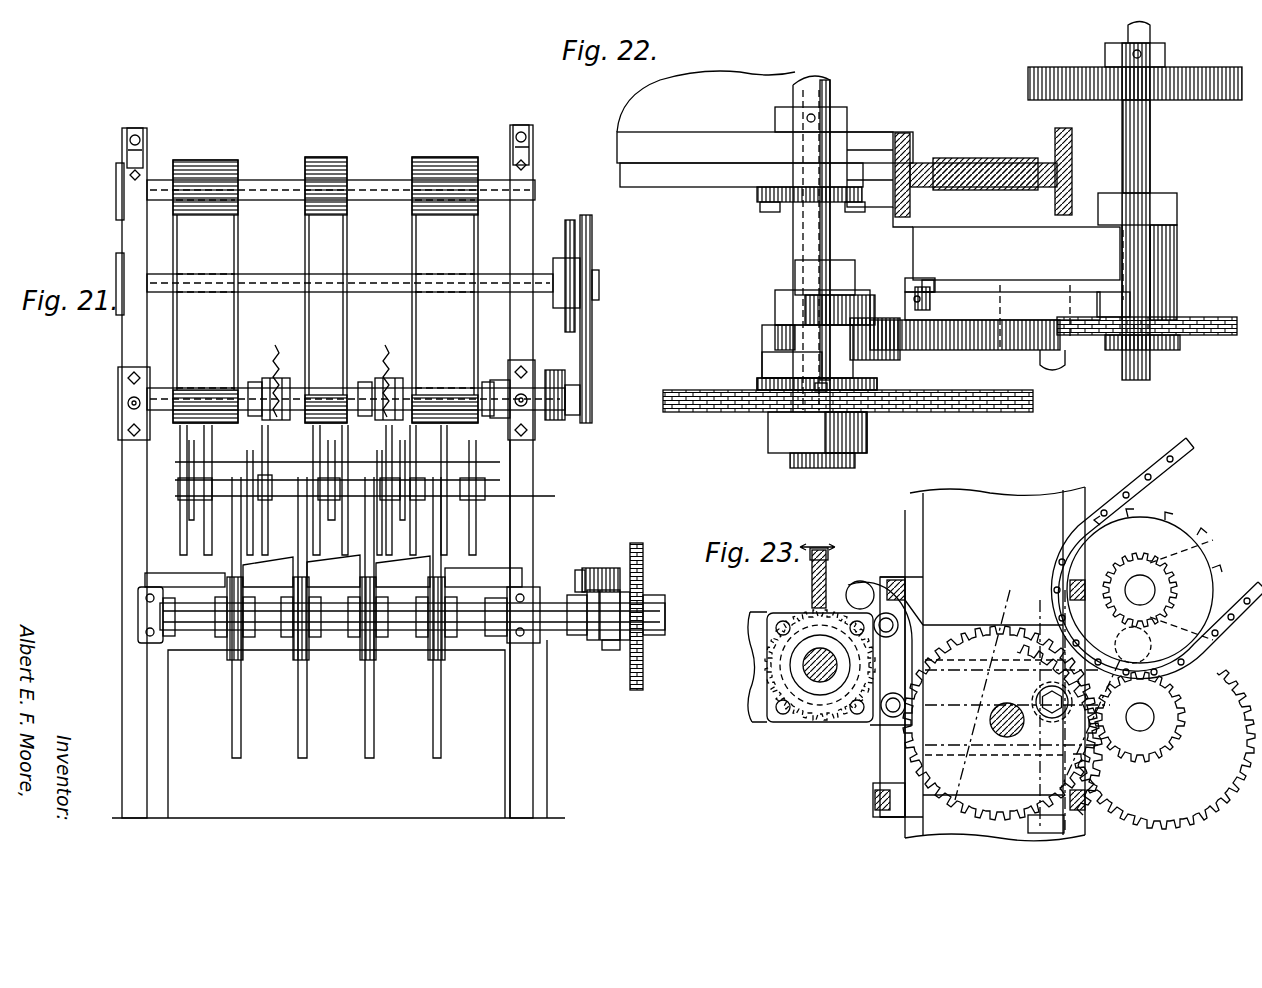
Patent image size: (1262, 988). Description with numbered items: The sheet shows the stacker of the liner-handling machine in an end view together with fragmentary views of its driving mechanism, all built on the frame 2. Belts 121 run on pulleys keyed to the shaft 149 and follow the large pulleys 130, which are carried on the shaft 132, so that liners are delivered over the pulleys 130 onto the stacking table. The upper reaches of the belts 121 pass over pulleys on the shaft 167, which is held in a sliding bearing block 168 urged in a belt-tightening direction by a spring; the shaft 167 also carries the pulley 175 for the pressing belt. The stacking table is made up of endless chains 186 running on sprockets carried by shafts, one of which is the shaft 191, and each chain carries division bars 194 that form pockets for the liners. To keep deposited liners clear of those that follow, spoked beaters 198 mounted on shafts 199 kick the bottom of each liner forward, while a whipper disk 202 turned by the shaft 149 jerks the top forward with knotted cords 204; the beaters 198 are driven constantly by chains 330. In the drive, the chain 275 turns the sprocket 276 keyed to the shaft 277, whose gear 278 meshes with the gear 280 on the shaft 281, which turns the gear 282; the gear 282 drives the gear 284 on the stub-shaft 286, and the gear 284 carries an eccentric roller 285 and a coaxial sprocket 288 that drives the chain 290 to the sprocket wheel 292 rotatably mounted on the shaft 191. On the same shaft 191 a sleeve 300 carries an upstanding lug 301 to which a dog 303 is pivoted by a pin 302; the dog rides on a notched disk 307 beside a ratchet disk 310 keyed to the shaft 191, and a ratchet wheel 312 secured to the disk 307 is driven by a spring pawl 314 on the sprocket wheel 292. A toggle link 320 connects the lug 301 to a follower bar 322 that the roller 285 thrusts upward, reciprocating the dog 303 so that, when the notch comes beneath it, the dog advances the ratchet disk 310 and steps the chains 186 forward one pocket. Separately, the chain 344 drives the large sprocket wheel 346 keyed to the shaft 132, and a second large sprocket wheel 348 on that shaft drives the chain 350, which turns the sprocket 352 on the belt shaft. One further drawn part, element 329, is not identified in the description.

In FIG. 21, the frame 2 is at (520, 456).
In FIG. 22, the frame 2 is at (977, 165).
In FIG. 23, the frame 2 is at (987, 520).
In FIG. 21, the belts 121 is at (220, 251).
In FIG. 21, the large pulleys 130 is at (306, 310).
In FIG. 21, the shaft 132 is at (375, 283).
In FIG. 21, the shaft 149 is at (500, 418).
In FIG. 21, the shaft 167 is at (380, 191).
In FIG. 21, the sliding bearing block 168 is at (147, 146).
In FIG. 21, the pulley 175 is at (305, 172).
In FIG. 21, the endless chains 186 is at (245, 658).
In FIG. 21, the shaft 191 is at (332, 632).
In FIG. 22, the shaft 191 is at (805, 77).
In FIG. 23, the shaft 191 is at (820, 682).
In FIG. 21, the division bars 194 is at (365, 718).
In FIG. 21, the spoked beaters 198 is at (255, 386).
In FIG. 21, the shafts 199 is at (180, 488).
In FIG. 21, the whipper disk 202 is at (283, 388).
In FIG. 21, the cords 204 is at (275, 350).
In FIG. 23, the chain 275 is at (1160, 468).
In FIG. 23, the sprocket 276 is at (1195, 531).
In FIG. 22, the shaft 277 is at (1150, 160).
In FIG. 23, the shaft 277 is at (1140, 575).
In FIG. 22, the gear 278 is at (1168, 101).
In FIG. 23, the gear 278 is at (1213, 560).
In FIG. 22, the gear 280 is at (1210, 68).
In FIG. 23, the gear 280 is at (1175, 820).
In FIG. 23, the shaft 281 is at (1145, 718).
In FIG. 22, the gear 282 is at (1125, 352).
In FIG. 23, the gear 282 is at (1165, 760).
In FIG. 22, the gear 284 is at (1060, 370).
In FIG. 23, the gear 284 is at (1042, 833).
In FIG. 22, the eccentric roller 285 is at (1070, 290).
In FIG. 23, the eccentric roller 285 is at (1015, 770).
In FIG. 23, the stub-shaft 286 is at (1000, 722).
In FIG. 22, the sprocket 288 is at (1035, 411).
In FIG. 21, the chain 290 is at (643, 660).
In FIG. 22, the chain 290 is at (955, 413).
In FIG. 22, the sprocket wheel 292 is at (770, 430).
In FIG. 21, the sleeve 300 is at (577, 635).
In FIG. 22, the sleeve 300 is at (800, 300).
In FIG. 21, the upstanding lug 301 is at (580, 572).
In FIG. 22, the upstanding lug 301 is at (935, 280).
In FIG. 22, the pin 302 is at (870, 362).
In FIG. 21, the dog 303 is at (612, 568).
In FIG. 22, the dog 303 is at (825, 340).
In FIG. 23, the dog 303 is at (860, 583).
In FIG. 21, the notched disk 307 is at (612, 640).
In FIG. 22, the notched disk 307 is at (776, 370).
In FIG. 22, the ratchet disk 310 is at (766, 341).
In FIG. 21, the ratchet wheel 312 is at (628, 690).
In FIG. 22, the ratchet wheel 312 is at (760, 383).
In FIG. 23, the ratchet wheel 312 is at (785, 700).
In FIG. 22, the spring pawl 314 is at (821, 392).
In FIG. 23, the spring pawl 314 is at (830, 552).
In FIG. 22, the toggle link 320 is at (920, 311).
In FIG. 23, the toggle link 320 is at (915, 640).
In FIG. 22, the follower bar 322 is at (1000, 300).
In FIG. 23, the follower bar 322 is at (1018, 630).
In FIG. 23, the chain 329 is at (1210, 640).
In FIG. 21, the chains 330 is at (420, 497).
In FIG. 21, the chain 344 is at (570, 220).
In FIG. 21, the large sprocket wheel 346 is at (556, 258).
In FIG. 21, the second large sprocket wheel 348 is at (599, 263).
In FIG. 21, the chain 350 is at (592, 318).
In FIG. 21, the sprocket 352 is at (565, 385).